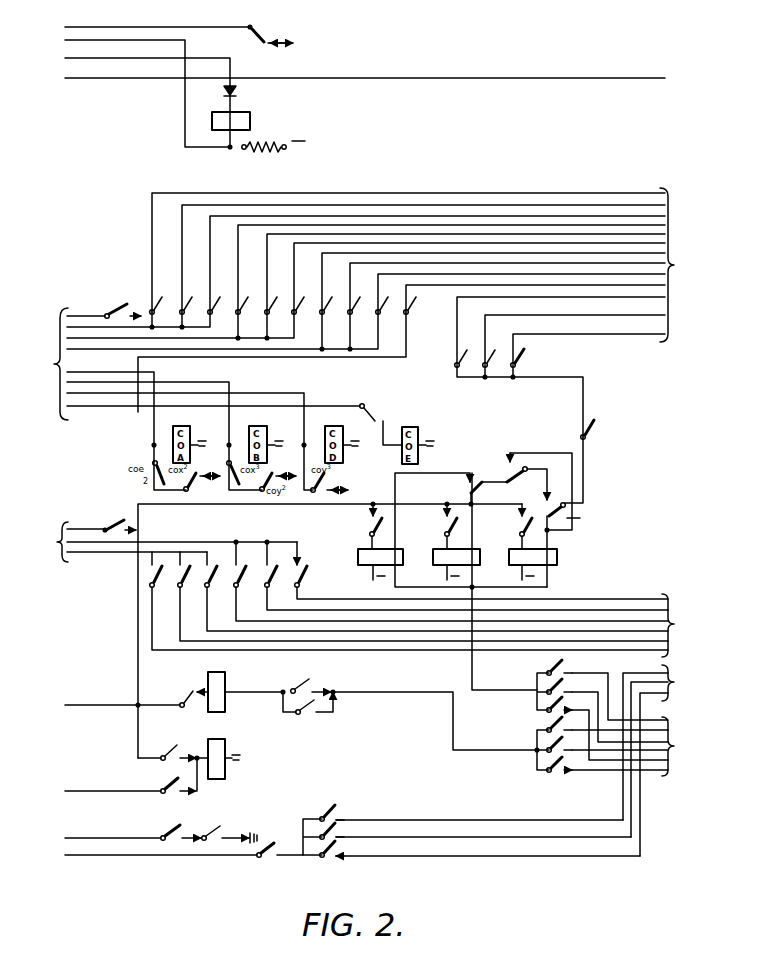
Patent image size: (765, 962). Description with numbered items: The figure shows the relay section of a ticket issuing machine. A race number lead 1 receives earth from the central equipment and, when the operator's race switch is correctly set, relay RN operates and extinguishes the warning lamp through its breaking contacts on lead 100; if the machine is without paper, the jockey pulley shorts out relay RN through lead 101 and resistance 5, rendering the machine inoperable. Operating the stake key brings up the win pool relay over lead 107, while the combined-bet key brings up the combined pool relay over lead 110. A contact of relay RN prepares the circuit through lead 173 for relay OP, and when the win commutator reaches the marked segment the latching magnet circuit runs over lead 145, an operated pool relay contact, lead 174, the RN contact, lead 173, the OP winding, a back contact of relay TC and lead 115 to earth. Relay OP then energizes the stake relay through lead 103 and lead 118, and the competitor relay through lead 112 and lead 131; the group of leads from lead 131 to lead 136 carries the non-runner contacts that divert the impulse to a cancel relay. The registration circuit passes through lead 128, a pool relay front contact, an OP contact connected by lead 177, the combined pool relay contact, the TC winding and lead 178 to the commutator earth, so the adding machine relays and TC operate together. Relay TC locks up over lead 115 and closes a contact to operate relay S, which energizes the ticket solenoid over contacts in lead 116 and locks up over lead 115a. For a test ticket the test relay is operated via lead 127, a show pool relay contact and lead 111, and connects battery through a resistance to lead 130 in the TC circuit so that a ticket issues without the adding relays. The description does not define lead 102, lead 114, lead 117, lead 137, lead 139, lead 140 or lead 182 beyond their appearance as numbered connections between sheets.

The race number lead 1 is at (356, 78).
The resistance 5 is at (278, 151).
The lead 100 is at (160, 30).
The lead 101 is at (128, 89).
The conductor 102 with RN rectifier 102 is at (140, 98).
The lead 103 is at (82, 356).
The lead 107 is at (113, 362).
The lead 110 is at (104, 406).
The lead 111 is at (397, 358).
The lead 112 is at (81, 536).
The conductors to 114 is at (172, 563).
The lead 115 is at (117, 696).
The lead 115a is at (133, 771).
The lead 116 is at (141, 831).
The conductor 117 is at (164, 852).
The lead 118 is at (426, 265).
The lead 127 is at (452, 285).
The lead 128 is at (601, 297).
The lead 130 is at (608, 316).
The lead 131 is at (469, 622).
The lead 136 is at (427, 618).
The conductor 137 (coa6/cob6/cod6 contacts) 137 is at (419, 806).
The conductors 137 to 139 (cod1/cob1/coa1 contacts) 139 is at (619, 707).
The conductors 140 to 145 (cod2/cob2/coa2 contacts) 140 is at (618, 745).
The lead 145 is at (663, 764).
The lead 173 is at (262, 690).
The lead 174 is at (409, 690).
The lead 177 is at (558, 375).
The lead 178 is at (470, 665).
The conductor 182 (COY/COX/TC relay circuit) 182 is at (313, 506).